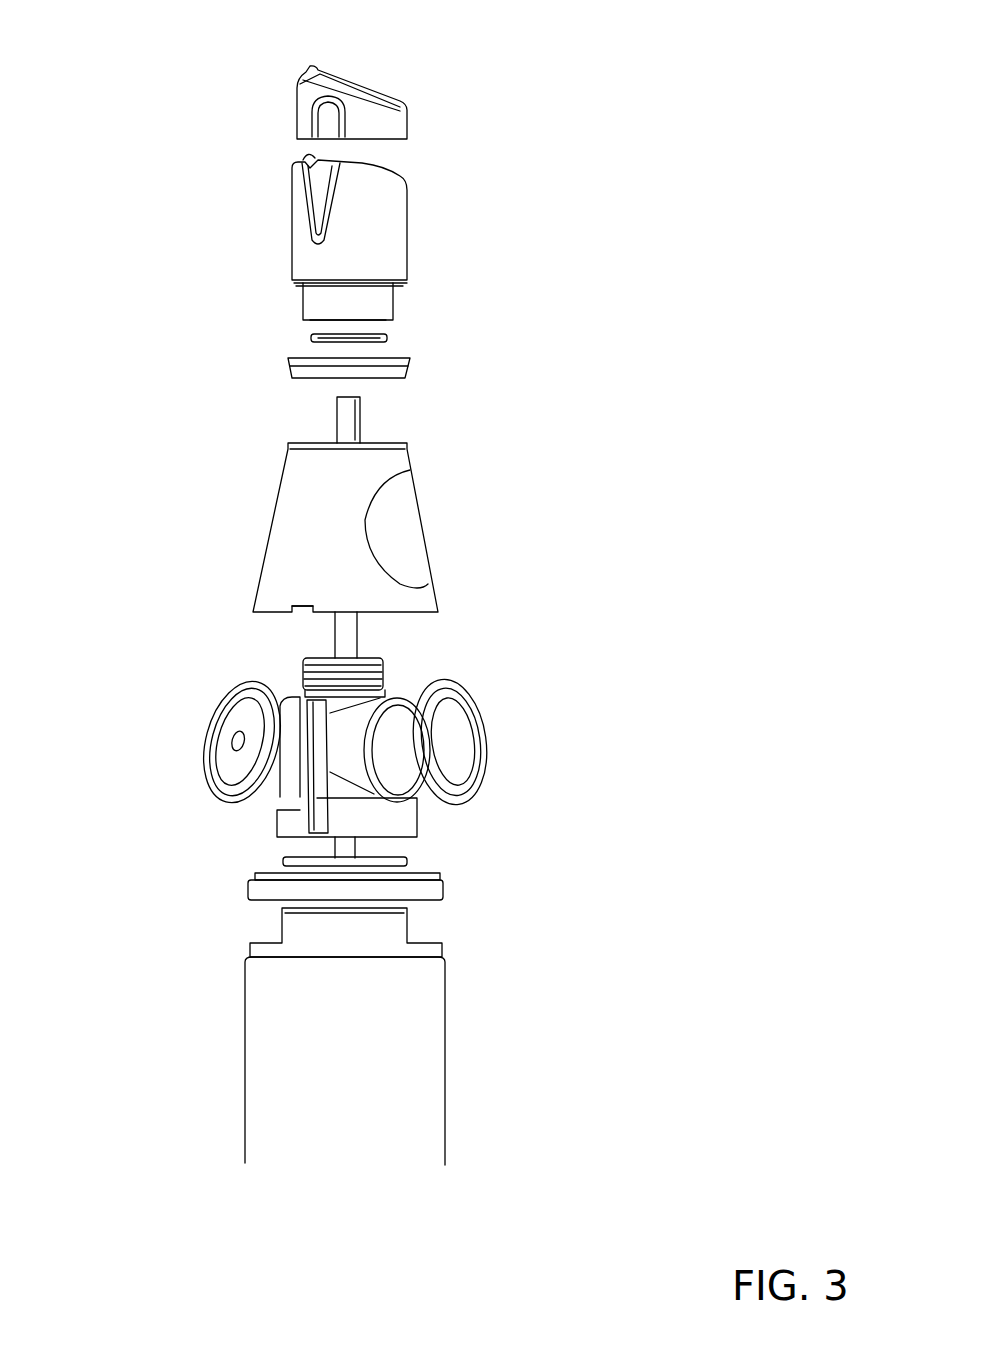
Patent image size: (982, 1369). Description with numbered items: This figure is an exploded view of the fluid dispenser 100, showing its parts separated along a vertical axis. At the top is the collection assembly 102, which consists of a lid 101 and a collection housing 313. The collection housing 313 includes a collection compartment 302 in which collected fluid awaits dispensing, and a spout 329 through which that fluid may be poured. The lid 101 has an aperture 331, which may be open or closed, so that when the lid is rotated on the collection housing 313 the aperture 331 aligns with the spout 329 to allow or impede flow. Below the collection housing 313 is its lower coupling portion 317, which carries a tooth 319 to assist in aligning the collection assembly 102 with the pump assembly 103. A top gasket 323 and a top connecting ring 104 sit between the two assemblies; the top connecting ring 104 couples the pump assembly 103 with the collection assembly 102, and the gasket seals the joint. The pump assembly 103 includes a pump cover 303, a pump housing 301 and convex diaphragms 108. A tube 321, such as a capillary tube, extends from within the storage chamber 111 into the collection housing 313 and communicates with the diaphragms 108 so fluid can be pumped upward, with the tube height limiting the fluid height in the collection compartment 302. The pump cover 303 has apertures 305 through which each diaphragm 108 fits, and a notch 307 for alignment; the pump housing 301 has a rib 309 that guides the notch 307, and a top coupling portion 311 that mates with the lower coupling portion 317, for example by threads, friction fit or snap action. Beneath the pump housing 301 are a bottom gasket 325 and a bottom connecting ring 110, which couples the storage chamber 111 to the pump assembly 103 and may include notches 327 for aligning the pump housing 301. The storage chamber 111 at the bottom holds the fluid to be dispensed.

The fluid dispenser 100 is at (212, 193).
The lid 101 is at (388, 118).
The collection assembly 102 is at (477, 75).
The pump assembly 103 is at (525, 398).
The top connecting ring 104 is at (395, 366).
The convex diaphragm 108 is at (215, 747).
The bottom connecting ring 110 is at (420, 895).
The storage chamber 111 is at (445, 1023).
The pump housing 301 is at (385, 695).
The collection compartment 302 is at (385, 164).
The pump cover 303 is at (418, 603).
The aperture 305 is at (392, 522).
The notch 307 is at (300, 613).
The rib 309 is at (290, 790).
The top coupling portion 311 is at (308, 668).
The collection housing 313 is at (390, 229).
The lower coupling portion 317 is at (325, 290).
The tooth 319 is at (332, 325).
The tube 321 is at (345, 425).
The top gasket 323 is at (388, 337).
The bottom gasket 325 is at (407, 861).
The notch 327 is at (400, 872).
The spout 329 is at (307, 159).
The aperture 331 is at (318, 105).